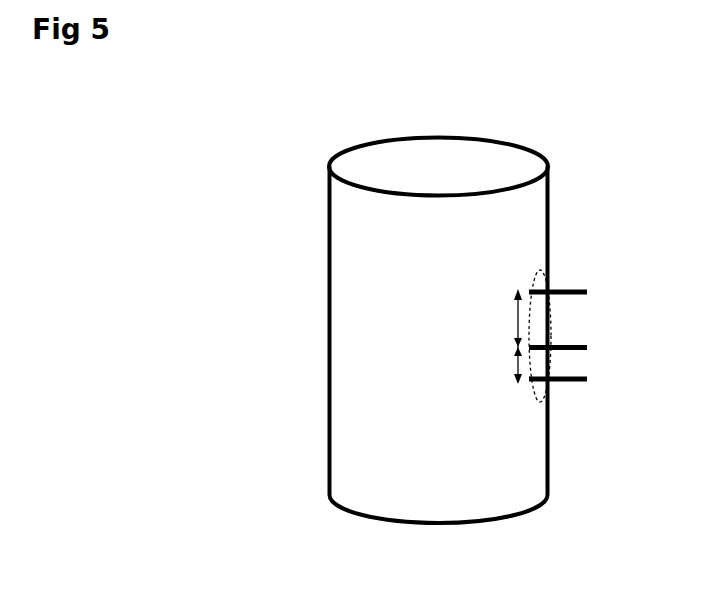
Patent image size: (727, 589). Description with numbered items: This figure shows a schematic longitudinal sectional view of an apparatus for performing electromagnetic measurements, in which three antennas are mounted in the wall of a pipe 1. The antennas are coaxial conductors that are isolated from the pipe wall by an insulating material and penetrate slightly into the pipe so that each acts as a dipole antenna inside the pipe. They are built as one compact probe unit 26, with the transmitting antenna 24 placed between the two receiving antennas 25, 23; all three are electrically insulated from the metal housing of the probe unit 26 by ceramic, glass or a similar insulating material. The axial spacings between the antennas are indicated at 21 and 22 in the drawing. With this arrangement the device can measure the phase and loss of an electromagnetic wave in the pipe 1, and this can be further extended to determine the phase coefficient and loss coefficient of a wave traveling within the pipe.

The cylindrical body / container 1 is at (329, 318).
The first distance (between upper and middle marks) 21 is at (518, 317).
The second distance (between middle and lower marks) 22 is at (517, 369).
The receiving antenna 23 is at (583, 382).
The transmitting antenna 24 is at (587, 347).
The receiving antenna 25 is at (587, 292).
The compact probe unit 26 is at (540, 270).